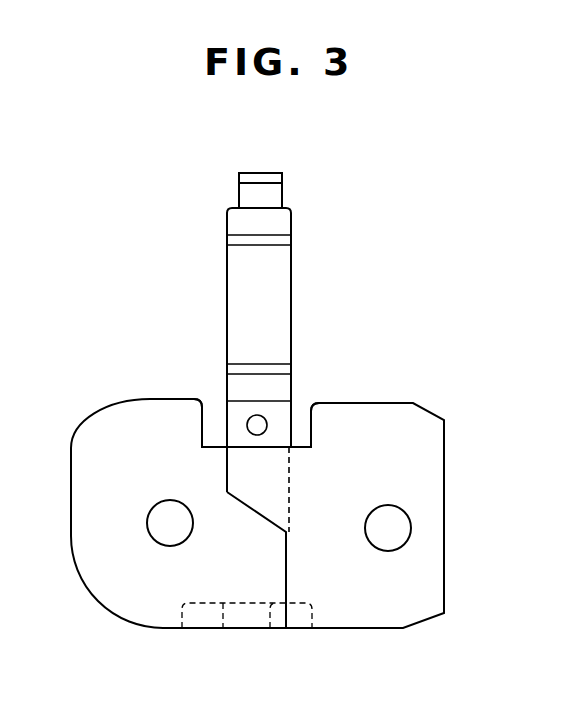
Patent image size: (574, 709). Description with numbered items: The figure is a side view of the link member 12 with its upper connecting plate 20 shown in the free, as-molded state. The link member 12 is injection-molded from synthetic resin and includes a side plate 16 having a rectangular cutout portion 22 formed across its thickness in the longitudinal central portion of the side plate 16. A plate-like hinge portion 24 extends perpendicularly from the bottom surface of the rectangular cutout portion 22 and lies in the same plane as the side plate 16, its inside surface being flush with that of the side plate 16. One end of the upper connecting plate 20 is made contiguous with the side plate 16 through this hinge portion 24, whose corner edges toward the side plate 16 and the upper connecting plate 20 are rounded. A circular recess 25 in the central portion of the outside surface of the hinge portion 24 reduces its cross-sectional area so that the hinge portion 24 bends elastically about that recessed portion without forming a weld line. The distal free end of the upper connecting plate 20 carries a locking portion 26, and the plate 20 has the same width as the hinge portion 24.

The link member 12 is at (414, 384).
The side plate 16 is at (77, 480).
The upper connecting plate 20 is at (238, 276).
The rectangular cutout portion 22 is at (215, 408).
The hinge portion 24 is at (282, 425).
The circular recess 25 is at (257, 415).
The locking portion 26 is at (273, 197).